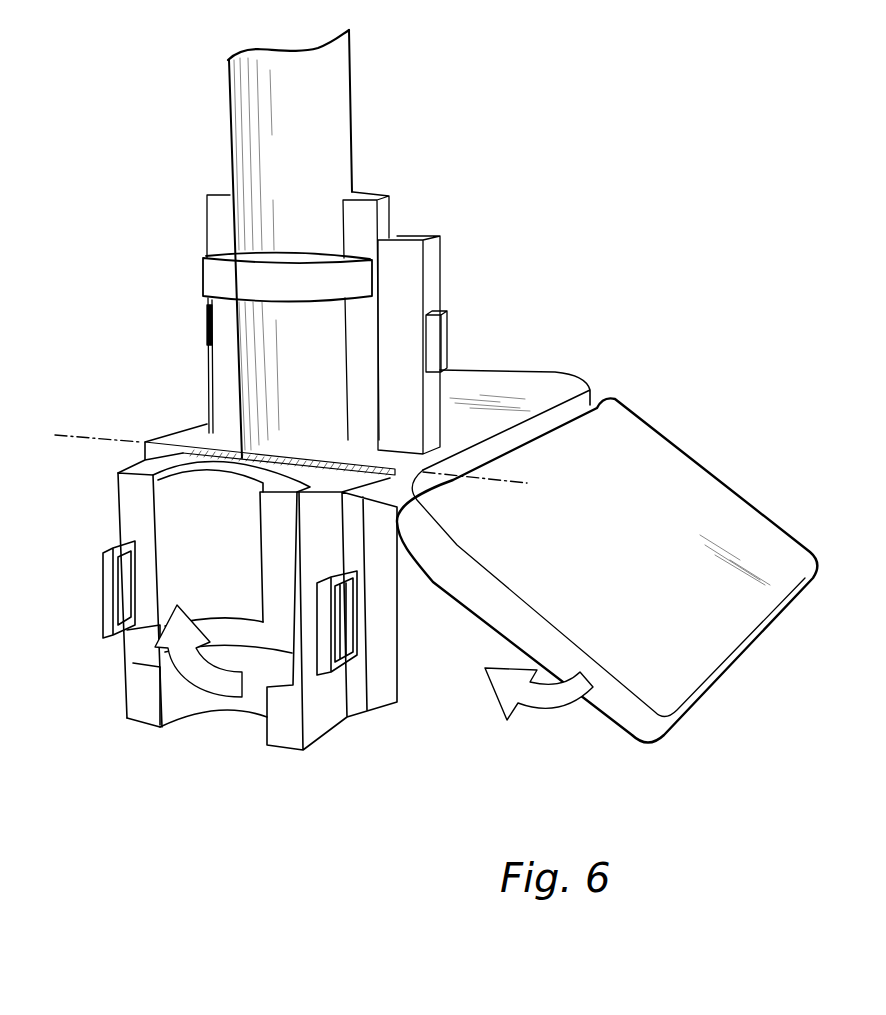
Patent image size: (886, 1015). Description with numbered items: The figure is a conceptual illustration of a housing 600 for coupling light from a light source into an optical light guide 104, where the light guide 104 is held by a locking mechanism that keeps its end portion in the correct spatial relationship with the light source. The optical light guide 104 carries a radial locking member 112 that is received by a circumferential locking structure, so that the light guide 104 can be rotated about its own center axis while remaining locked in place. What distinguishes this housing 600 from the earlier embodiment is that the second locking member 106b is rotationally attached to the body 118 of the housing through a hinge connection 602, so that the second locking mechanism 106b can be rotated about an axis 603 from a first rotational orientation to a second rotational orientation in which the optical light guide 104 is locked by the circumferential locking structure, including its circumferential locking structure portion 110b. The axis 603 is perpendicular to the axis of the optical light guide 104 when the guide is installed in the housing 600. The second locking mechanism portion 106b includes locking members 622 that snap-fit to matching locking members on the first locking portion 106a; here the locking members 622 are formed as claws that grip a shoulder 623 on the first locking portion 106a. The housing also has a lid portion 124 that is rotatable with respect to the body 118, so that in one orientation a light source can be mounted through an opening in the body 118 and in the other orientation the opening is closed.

The housing 600 is at (86, 102).
The optical light guide 104 is at (250, 119).
The first locking portion 106a is at (218, 226).
The second locking member 106b is at (136, 505).
The circumferential locking structure portion 110b is at (138, 647).
The radial locking member 112 is at (221, 279).
The body 118 is at (471, 388).
The lid portion 124 is at (480, 597).
The hinge connection 602 is at (416, 453).
The axis 603 is at (108, 438).
The locking members 622 is at (101, 589).
The shoulder 623 is at (436, 254).